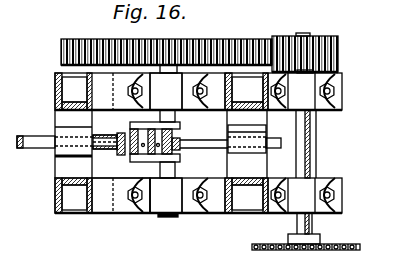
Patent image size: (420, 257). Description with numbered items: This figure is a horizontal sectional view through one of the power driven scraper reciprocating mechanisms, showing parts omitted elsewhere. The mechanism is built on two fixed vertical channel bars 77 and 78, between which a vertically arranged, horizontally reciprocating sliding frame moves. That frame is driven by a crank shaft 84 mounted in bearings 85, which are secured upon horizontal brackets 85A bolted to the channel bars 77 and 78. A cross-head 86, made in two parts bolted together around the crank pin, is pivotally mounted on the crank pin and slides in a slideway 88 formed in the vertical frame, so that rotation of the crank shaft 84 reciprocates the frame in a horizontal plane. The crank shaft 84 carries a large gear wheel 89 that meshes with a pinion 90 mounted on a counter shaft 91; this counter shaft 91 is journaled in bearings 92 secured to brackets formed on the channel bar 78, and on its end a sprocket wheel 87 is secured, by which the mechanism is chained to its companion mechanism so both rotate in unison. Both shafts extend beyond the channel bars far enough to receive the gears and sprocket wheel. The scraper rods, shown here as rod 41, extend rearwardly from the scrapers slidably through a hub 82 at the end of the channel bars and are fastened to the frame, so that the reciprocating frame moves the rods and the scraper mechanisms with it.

The vertical channel bar 77 is at (55, 85).
The gear wheel 89 is at (82, 34).
The pinion 90 is at (342, 40).
The shaft 41 is at (30, 137).
The bearing 85 is at (147, 224).
The horizontal bracket 85A is at (108, 204).
The vertical channel bar 78 is at (242, 205).
The bearing 92 is at (343, 99).
The crank shaft 84 is at (176, 121).
The cross-head 86 is at (124, 155).
The slideway 88 is at (178, 155).
The hub 82 is at (258, 148).
The counter shaft 91 is at (305, 139).
The sprocket wheel 87 is at (344, 242).